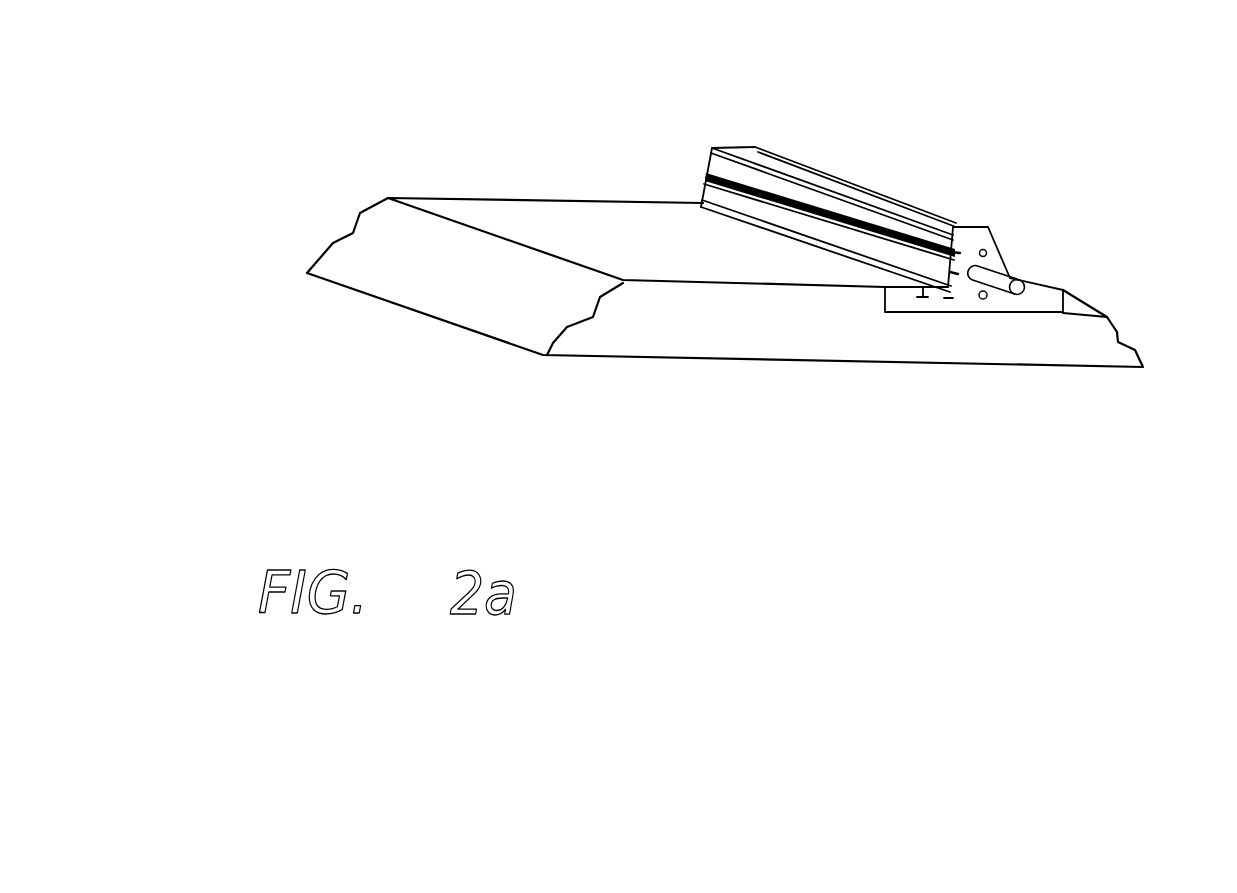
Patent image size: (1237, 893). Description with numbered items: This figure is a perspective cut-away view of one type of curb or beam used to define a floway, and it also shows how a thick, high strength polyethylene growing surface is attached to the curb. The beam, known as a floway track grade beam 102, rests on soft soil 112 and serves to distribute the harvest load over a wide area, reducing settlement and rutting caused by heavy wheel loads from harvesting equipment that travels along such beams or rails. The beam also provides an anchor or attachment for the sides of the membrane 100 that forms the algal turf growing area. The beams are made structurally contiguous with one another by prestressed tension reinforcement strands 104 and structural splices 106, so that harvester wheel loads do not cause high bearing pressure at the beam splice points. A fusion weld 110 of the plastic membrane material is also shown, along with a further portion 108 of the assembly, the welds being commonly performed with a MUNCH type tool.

The membrane 100 is at (507, 235).
The floway track grade beam 102 is at (957, 219).
The prestressed tension reinforcement strand 104 is at (986, 250).
The structural splice 106 is at (1013, 280).
The rail groove 108 is at (944, 218).
The fusion weld 110 is at (732, 175).
The soft soil 112 is at (788, 340).